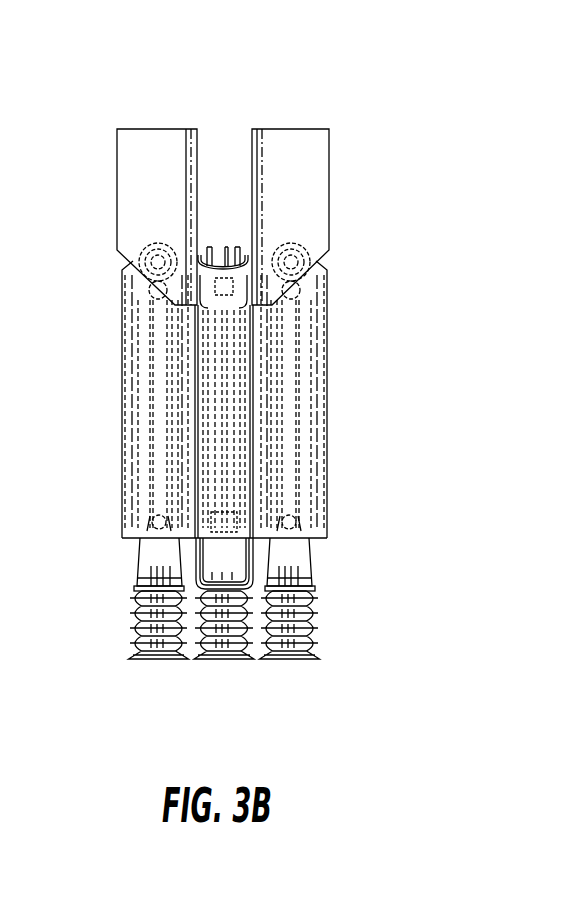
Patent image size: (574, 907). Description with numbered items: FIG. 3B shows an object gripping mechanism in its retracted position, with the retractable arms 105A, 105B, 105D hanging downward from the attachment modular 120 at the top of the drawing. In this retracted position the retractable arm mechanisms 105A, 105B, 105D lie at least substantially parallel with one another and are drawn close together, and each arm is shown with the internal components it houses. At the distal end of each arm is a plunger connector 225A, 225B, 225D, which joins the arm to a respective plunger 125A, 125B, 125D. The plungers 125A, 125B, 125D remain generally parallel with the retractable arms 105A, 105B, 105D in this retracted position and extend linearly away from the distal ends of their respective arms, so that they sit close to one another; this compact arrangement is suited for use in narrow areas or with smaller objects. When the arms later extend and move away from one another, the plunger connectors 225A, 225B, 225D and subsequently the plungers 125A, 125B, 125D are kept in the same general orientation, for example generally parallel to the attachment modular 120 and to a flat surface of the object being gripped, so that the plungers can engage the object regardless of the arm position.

The attachment modular 120 is at (280, 129).
The retractable arm 105A is at (118, 367).
The retractable arm 105B is at (216, 381).
The retractable arm 105D is at (330, 342).
The plunger connector 225A is at (152, 564).
The plunger connector 225B is at (243, 562).
The plunger connector 225D is at (302, 568).
The plunger 125A is at (140, 622).
The plunger 125B is at (218, 645).
The plunger 125D is at (302, 625).